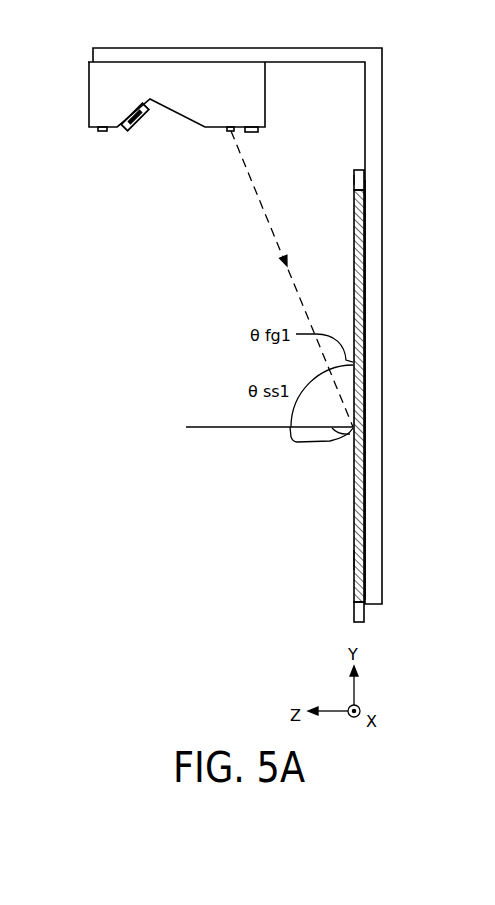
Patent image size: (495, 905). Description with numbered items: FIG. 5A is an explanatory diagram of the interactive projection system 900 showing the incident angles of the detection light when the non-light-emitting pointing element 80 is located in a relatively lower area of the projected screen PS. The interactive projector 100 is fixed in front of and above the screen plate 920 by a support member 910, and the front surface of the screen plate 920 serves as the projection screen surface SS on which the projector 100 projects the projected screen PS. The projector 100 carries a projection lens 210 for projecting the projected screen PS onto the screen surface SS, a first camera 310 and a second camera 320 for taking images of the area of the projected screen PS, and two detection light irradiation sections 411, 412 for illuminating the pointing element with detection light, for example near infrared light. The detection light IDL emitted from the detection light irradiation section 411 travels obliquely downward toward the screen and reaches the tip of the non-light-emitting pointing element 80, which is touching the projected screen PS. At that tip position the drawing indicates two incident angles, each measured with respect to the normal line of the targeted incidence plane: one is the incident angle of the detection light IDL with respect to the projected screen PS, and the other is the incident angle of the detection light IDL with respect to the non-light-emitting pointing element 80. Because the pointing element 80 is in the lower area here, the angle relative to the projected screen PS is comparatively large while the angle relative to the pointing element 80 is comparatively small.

The interactive projector 100 is at (214, 73).
The projection lens 210 is at (118, 131).
The first camera 310 is at (118, 113).
The second camera 320 is at (262, 130).
The detection light irradiation section 411 is at (228, 133).
The detection light irradiation section 412 is at (92, 131).
The non-light-emitting pointing element 80 is at (293, 445).
The interactive projection system 900 is at (412, 73).
The support member 910 is at (375, 165).
The screen plate 920 is at (359, 180).
The projection screen surface SS is at (353, 175).
The projected screen PS is at (354, 560).
The detection light IDL is at (292, 279).